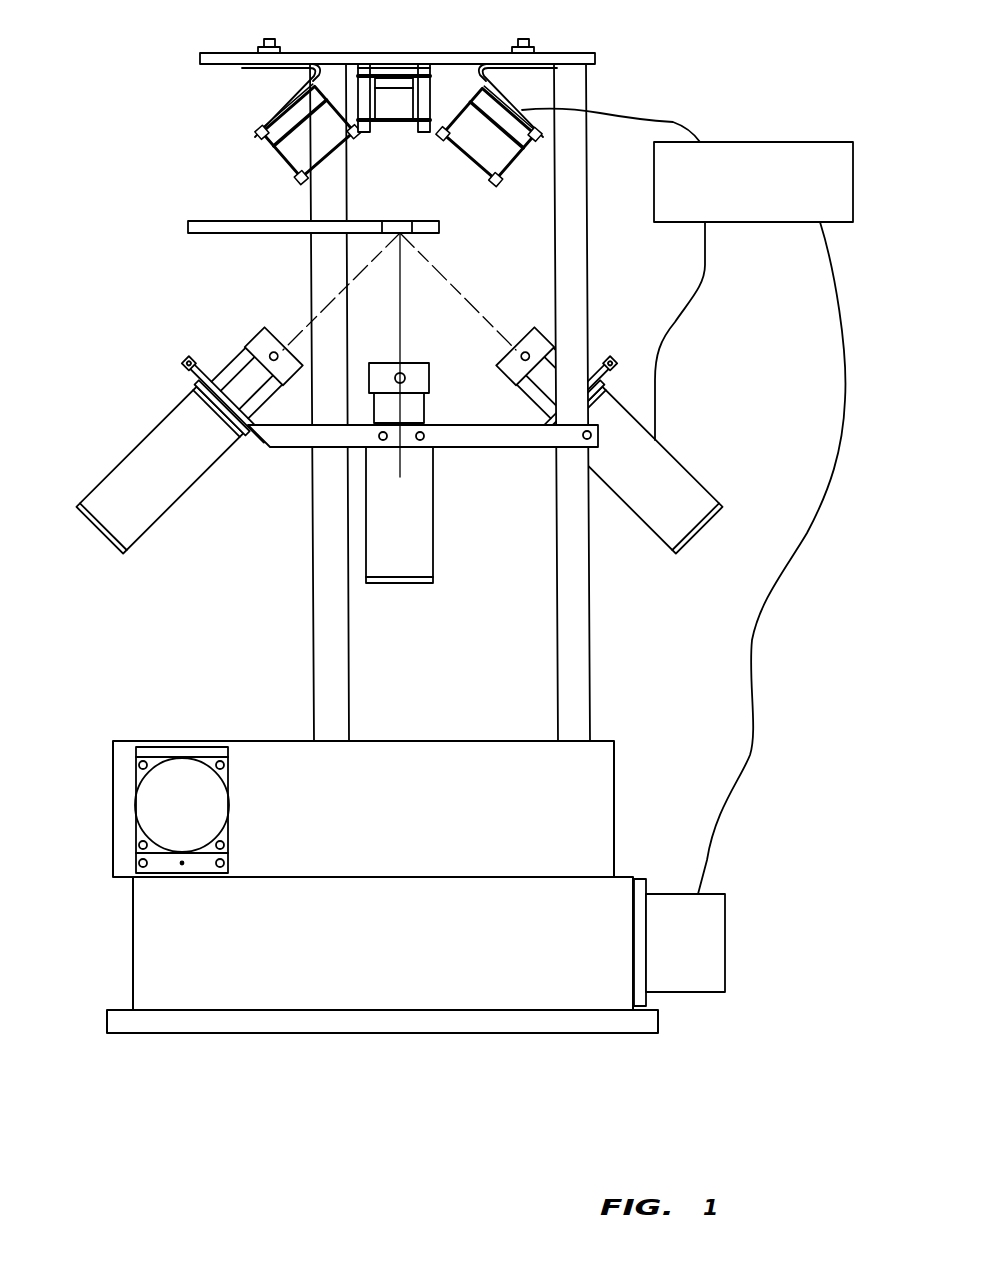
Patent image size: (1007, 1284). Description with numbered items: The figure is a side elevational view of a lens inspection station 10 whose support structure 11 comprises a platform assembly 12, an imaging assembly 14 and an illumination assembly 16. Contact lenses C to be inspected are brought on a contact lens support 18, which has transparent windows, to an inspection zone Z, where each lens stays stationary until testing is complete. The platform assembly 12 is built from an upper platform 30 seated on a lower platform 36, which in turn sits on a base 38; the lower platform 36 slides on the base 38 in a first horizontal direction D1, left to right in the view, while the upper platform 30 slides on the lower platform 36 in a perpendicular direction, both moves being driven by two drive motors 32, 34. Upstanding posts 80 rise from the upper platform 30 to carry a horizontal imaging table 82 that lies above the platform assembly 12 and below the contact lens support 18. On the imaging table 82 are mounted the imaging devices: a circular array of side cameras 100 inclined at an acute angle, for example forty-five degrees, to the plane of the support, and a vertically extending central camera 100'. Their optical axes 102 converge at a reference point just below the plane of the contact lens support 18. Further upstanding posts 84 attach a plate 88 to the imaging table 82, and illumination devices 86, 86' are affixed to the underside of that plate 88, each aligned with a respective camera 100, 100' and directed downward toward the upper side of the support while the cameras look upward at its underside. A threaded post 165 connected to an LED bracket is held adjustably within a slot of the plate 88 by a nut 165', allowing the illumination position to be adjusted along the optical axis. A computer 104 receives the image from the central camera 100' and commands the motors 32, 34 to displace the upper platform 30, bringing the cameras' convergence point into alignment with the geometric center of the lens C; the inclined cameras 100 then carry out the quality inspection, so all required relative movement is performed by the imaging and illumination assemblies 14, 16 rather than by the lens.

The lens inspection station 10 is at (213, 35).
The support structure 11 is at (627, 97).
The platform assembly 12 is at (748, 900).
The imaging assembly 14 is at (290, 322).
The illumination assembly 16 is at (268, 103).
The contact lens support 18 is at (192, 221).
The upper platform 30 is at (278, 741).
The drive motor 32 is at (168, 778).
The drive motor 34 is at (710, 943).
The lower platform 36 is at (622, 883).
The base 38 is at (660, 1020).
The upstanding posts 80 is at (350, 625).
The imaging table 82 is at (483, 445).
The upstanding posts 84 is at (588, 240).
The illumination device 86 is at (380, 152).
The illumination device 86' is at (402, 118).
The plate 88 is at (330, 53).
The side camera 100 is at (426, 467).
The central camera 100' is at (441, 473).
The optical axes 102 is at (470, 290).
The computer 104 is at (790, 142).
The threaded post 165 is at (555, 23).
The nut 165' is at (492, 28).
The contact lens C is at (397, 218).
The inspection zone Z is at (412, 213).
The first horizontal direction D1 is at (93, 968).